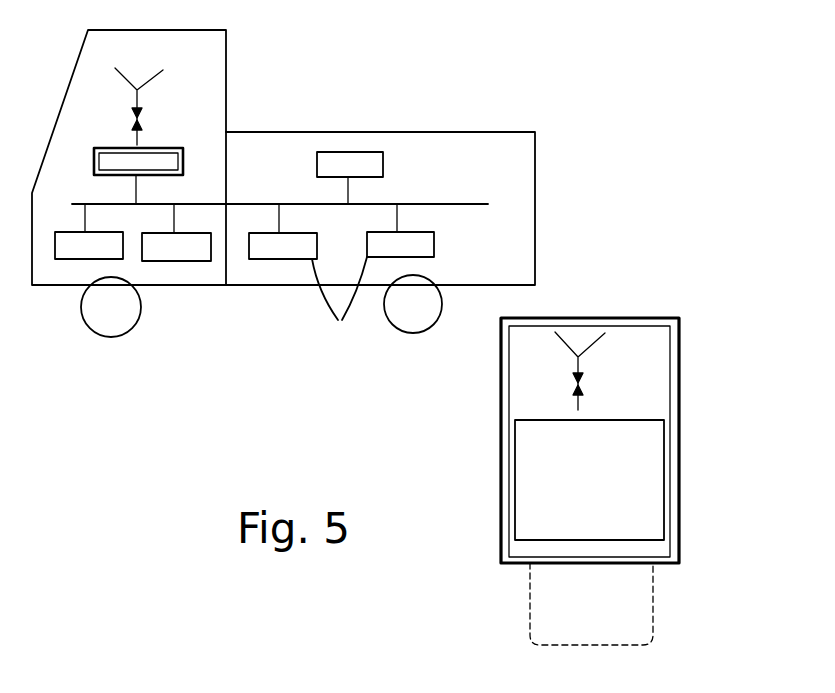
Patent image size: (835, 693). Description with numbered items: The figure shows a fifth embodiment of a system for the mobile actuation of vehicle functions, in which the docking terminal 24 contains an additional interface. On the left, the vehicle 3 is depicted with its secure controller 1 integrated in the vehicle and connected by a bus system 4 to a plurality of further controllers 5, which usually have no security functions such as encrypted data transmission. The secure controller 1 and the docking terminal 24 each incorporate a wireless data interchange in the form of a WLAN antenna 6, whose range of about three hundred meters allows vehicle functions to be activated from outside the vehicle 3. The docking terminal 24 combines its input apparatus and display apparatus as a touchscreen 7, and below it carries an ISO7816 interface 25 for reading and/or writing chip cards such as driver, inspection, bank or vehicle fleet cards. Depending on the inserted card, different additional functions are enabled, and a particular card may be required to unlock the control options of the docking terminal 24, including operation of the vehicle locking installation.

The secure controller 1 is at (163, 132).
The vehicle 3 is at (268, 303).
The bus system 4 is at (447, 204).
The further controllers 5 is at (339, 311).
The WLAN antenna 6 is at (173, 70).
The touchscreen 7 is at (650, 442).
The docking terminal 24 is at (500, 362).
The ISO7816 interface 25 is at (657, 565).